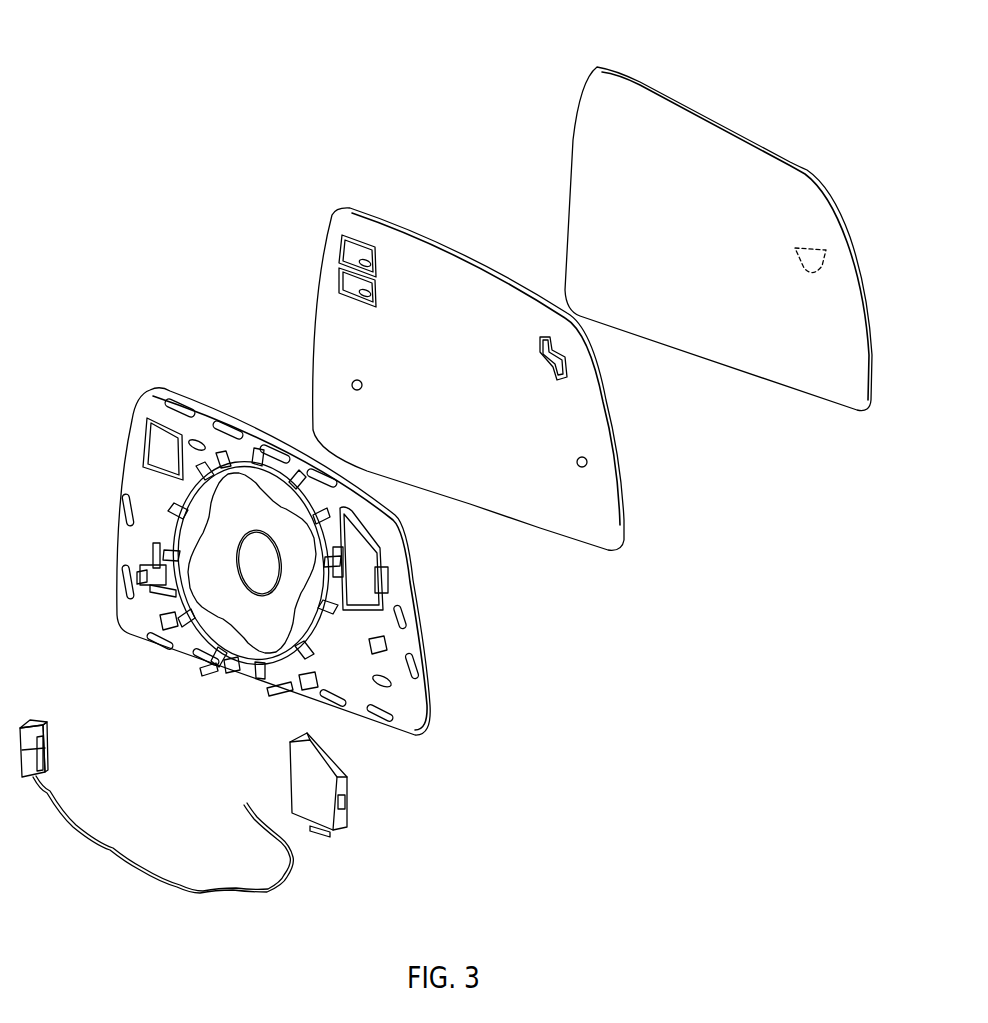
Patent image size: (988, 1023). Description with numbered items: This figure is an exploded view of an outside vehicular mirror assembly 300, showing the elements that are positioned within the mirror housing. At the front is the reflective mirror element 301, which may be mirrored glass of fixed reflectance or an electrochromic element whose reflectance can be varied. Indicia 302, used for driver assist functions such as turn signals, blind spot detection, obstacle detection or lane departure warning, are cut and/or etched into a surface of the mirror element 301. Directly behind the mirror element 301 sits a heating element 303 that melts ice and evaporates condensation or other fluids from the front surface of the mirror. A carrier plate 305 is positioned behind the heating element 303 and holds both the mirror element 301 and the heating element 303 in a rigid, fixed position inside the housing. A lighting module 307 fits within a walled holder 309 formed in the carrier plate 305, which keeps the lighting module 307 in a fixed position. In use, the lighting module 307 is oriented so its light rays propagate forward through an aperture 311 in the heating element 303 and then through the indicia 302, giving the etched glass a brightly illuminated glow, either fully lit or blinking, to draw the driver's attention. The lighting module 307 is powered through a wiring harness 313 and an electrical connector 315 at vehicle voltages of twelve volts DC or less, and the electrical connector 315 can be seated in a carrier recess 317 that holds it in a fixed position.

The mirror assembly 300 is at (162, 130).
The reflective mirror element 301 is at (667, 110).
The indicia 302 is at (810, 248).
The heating element 303 is at (437, 273).
The carrier plate 305 is at (200, 433).
The lighting module 307 is at (307, 810).
The walled holder 309 is at (356, 568).
The aperture 311 is at (537, 337).
The wiring harness 313 is at (103, 843).
The electrical connector 315 is at (37, 723).
The carrier recess 317 is at (133, 578).